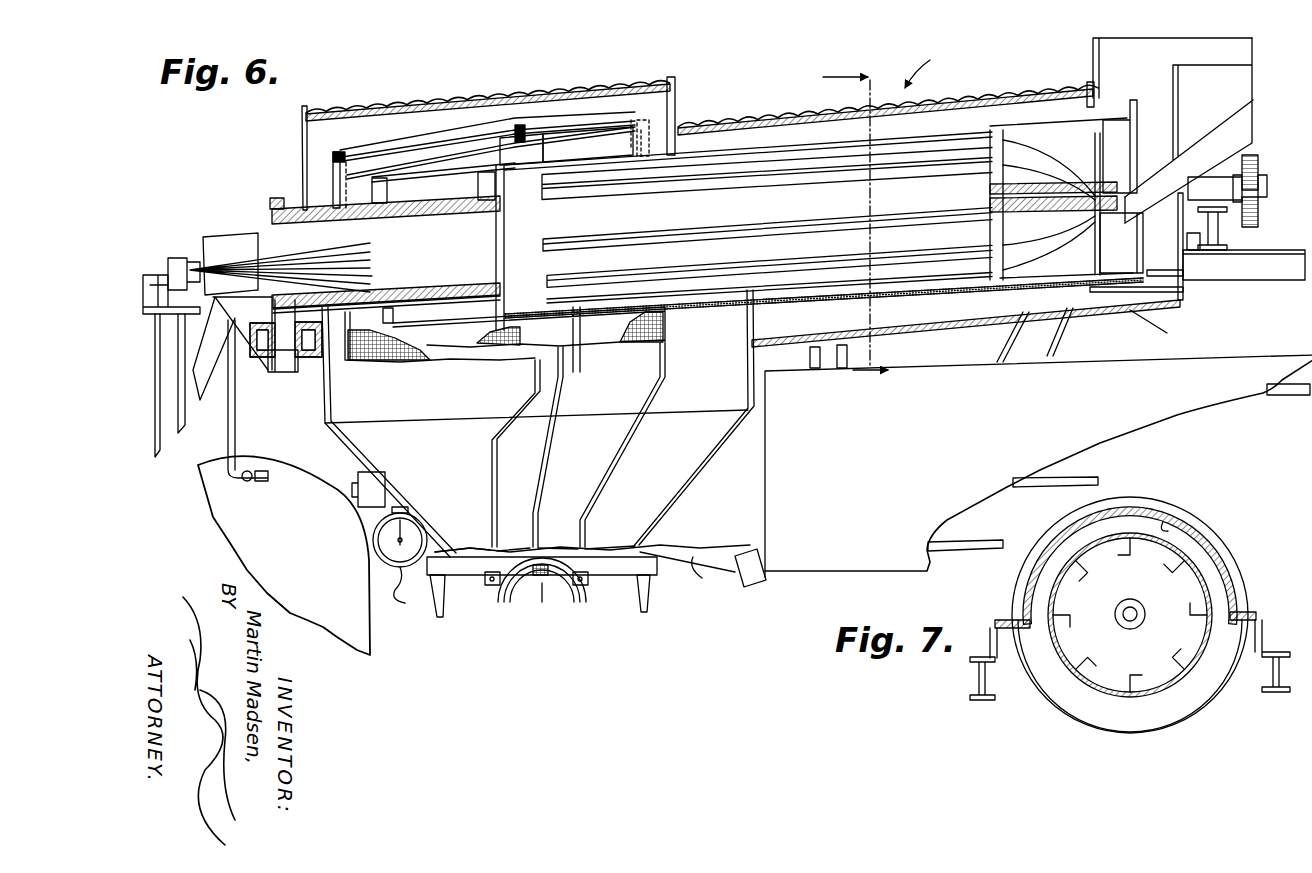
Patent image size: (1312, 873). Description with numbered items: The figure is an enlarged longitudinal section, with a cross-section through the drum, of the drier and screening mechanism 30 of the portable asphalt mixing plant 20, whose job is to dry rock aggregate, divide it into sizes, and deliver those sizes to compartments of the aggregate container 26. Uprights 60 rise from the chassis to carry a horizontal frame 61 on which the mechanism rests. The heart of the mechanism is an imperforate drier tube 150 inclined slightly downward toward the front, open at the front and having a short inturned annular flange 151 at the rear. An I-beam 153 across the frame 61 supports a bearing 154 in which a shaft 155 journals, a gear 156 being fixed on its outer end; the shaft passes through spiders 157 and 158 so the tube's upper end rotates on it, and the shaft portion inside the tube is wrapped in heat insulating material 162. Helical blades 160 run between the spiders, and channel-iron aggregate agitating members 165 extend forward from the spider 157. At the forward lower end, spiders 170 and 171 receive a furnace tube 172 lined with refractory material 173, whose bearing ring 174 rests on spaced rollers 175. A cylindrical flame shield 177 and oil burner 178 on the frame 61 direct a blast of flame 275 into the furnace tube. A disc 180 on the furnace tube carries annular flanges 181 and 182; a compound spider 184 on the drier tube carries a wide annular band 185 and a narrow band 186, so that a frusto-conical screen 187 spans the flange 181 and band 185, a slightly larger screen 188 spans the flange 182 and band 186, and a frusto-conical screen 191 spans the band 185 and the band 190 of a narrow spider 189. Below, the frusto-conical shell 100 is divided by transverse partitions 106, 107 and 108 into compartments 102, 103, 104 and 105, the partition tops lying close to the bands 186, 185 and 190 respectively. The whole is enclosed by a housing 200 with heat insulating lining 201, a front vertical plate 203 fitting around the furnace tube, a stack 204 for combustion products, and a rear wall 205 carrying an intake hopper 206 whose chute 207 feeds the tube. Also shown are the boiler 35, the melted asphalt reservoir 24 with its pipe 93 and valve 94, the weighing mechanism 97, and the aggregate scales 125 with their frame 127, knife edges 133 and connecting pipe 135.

In FIG. 6, the portable asphalt mixing plant 20 is at (923, 64).
In FIG. 6, the melted asphalt reservoir 24 is at (1065, 435).
In FIG. 6, the aggregate container 26 is at (352, 468).
In FIG. 6, the drier and screening mechanism 30 is at (713, 133).
In FIG. 7, the drier and screening mechanism 30 is at (1023, 587).
In FIG. 6, the boiler 35 is at (323, 597).
In FIG. 6, the uprights 60 is at (170, 462).
In FIG. 6, the horizontal frame 61 is at (1285, 277).
In FIG. 7, the horizontal frame 61 is at (977, 677).
In FIG. 6, the pipe 93 is at (703, 557).
In FIG. 6, the valve 94 is at (747, 552).
In FIG. 6, the weighing mechanism 97 is at (378, 540).
In FIG. 6, the frusto-conical shell 100 is at (687, 488).
In FIG. 6, the compartment 102 is at (450, 470).
In FIG. 6, the compartment 103 is at (533, 465).
In FIG. 6, the compartment 104 is at (603, 455).
In FIG. 6, the compartment 105 is at (693, 447).
In FIG. 6, the transverse partition 106 is at (532, 400).
In FIG. 6, the transverse partition 107 is at (560, 397).
In FIG. 6, the transverse partition 108 is at (663, 387).
In FIG. 6, the scales 125 is at (527, 597).
In FIG. 6, the frame 127 is at (500, 598).
In FIG. 6, the knife edges 133 is at (428, 580).
In FIG. 6, the pipe 135 is at (630, 570).
In FIG. 6, the drier tube 150 is at (940, 132).
In FIG. 7, the drier tube 150 is at (1097, 693).
In FIG. 6, the inturned annular flange 151 is at (1132, 132).
In FIG. 6, the I-beam 153 is at (1220, 232).
In FIG. 6, the bearing 154 is at (1258, 165).
In FIG. 6, the shaft 155 is at (1267, 185).
In FIG. 7, the shaft 155 is at (1128, 607).
In FIG. 6, the gear 156 is at (1258, 210).
In FIG. 6, the spider 157 is at (995, 143).
In FIG. 6, the spider 158 is at (1098, 160).
In FIG. 6, the helical blades 160 is at (1055, 255).
In FIG. 6, the heat insulating material 162 is at (1062, 192).
In FIG. 6, the channel-iron aggregate agitating members 165 is at (767, 230).
In FIG. 7, the channel-iron aggregate agitating members 165 is at (1128, 667).
In FIG. 6, the spider 170 is at (488, 185).
In FIG. 6, the spider 171 is at (380, 193).
In FIG. 6, the furnace tube 172 is at (463, 212).
In FIG. 6, the refractory material 173 is at (483, 213).
In FIG. 6, the bearing ring 174 is at (273, 198).
In FIG. 6, the rollers 175 is at (287, 365).
In FIG. 6, the cylindrical flame shield 177 is at (227, 243).
In FIG. 6, the oil burner 178 is at (177, 257).
In FIG. 6, the disc 180 is at (333, 155).
In FIG. 6, the annular flange 181 is at (347, 173).
In FIG. 6, the annular flange 182 is at (346, 155).
In FIG. 6, the compound spider 184 is at (543, 153).
In FIG. 6, the annular band 185 is at (523, 130).
In FIG. 6, the narrow band 186 is at (517, 127).
In FIG. 6, the frusto-conical screen 187 is at (455, 150).
In FIG. 6, the screen 188 is at (427, 141).
In FIG. 6, the narrow spider 189 is at (649, 135).
In FIG. 6, the band 190 is at (645, 120).
In FIG. 6, the frusto-conical screen 191 is at (610, 120).
In FIG. 6, the housing 200 is at (777, 113).
In FIG. 7, the housing 200 is at (1233, 580).
In FIG. 6, the lining 201 is at (518, 125).
In FIG. 7, the lining 201 is at (1170, 525).
In FIG. 6, the vertical plate 203 is at (303, 142).
In FIG. 6, the stack 204 is at (1137, 47).
In FIG. 6, the rear wall 205 is at (1187, 237).
In FIG. 6, the intake hopper 206 is at (1238, 98).
In FIG. 6, the chute 207 is at (1153, 210).
In FIG. 6, the blast of flame 275 is at (352, 260).